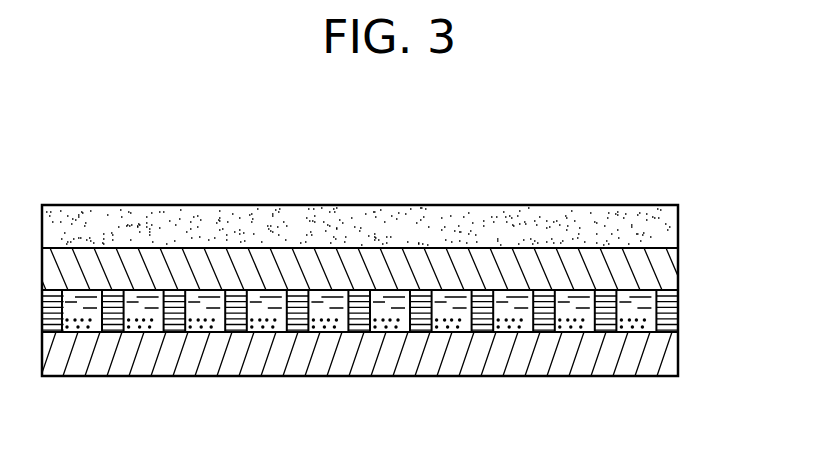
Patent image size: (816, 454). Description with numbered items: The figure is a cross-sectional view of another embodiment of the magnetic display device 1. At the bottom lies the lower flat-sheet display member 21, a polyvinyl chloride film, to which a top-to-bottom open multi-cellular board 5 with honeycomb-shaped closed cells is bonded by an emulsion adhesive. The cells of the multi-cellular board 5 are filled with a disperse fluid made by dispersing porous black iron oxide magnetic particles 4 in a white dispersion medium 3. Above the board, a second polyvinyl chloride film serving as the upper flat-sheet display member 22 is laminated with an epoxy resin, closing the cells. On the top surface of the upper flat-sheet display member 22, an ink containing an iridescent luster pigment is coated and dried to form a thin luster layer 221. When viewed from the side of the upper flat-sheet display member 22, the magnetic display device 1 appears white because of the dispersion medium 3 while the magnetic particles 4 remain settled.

The magnetic display device 1 is at (685, 178).
The lower flat-sheet display member 21 is at (665, 348).
The upper flat-sheet display member 22 is at (667, 268).
The luster layer 221 is at (667, 228).
The dispersion medium 3 is at (445, 325).
The magnetic particles 4 is at (572, 325).
The multi-cellular board 5 is at (386, 364).